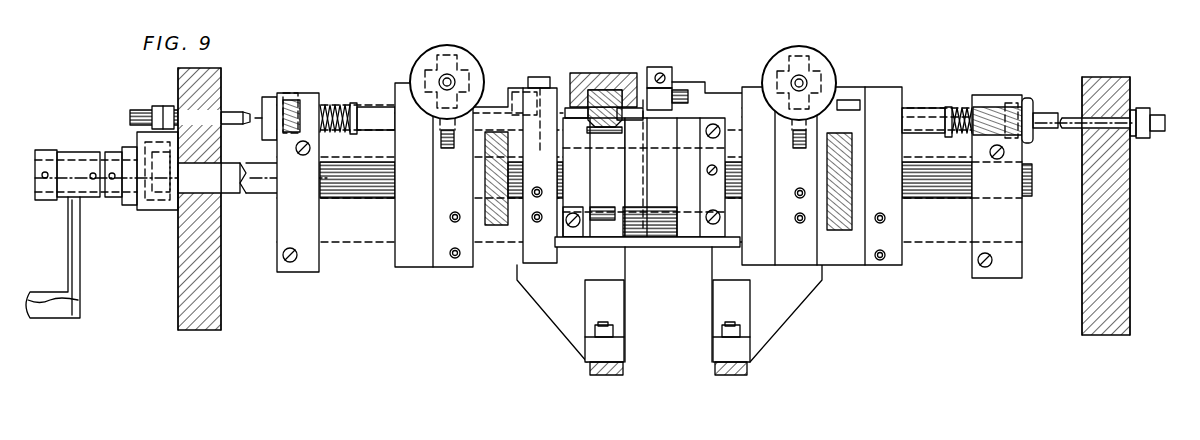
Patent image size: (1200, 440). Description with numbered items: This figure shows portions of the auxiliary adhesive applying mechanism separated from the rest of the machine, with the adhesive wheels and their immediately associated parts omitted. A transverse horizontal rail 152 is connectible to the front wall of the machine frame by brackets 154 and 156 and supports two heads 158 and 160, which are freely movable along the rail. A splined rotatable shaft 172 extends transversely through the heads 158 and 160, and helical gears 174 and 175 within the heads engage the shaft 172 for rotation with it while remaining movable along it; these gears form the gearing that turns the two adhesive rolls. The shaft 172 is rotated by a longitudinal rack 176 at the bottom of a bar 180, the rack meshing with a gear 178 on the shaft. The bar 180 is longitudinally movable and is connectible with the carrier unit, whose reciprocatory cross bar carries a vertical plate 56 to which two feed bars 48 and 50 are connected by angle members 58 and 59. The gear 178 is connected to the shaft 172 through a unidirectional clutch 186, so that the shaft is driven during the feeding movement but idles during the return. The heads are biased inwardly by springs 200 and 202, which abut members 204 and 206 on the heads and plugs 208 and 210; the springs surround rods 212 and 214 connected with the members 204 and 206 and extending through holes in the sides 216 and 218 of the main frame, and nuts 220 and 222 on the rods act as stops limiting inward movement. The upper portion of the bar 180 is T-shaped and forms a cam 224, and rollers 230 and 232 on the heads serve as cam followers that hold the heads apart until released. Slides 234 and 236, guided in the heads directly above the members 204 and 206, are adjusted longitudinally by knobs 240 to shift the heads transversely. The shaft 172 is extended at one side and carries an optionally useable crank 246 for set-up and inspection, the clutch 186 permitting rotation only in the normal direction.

The feed bar 48 is at (618, 377).
The feed bar 50 is at (725, 377).
The vertical plate 56 is at (538, 313).
The angle member 58 is at (591, 305).
The angle member 59 is at (751, 292).
The transverse horizontal rail 152 is at (357, 237).
The bracket 154 is at (278, 230).
The bracket 156 is at (1020, 218).
The head 158 is at (446, 268).
The head 160 is at (900, 268).
The rotatable shaft 172 is at (332, 162).
The helical gear 174 is at (494, 228).
The helical gear 175 is at (836, 231).
The longitudinal rack 176 is at (598, 130).
The gear 178 is at (605, 220).
The bar 180 is at (610, 90).
The unidirectional clutch 186 is at (648, 242).
The spring 200 is at (326, 104).
The spring 202 is at (970, 108).
The member 204 is at (360, 110).
The member 206 is at (912, 110).
The plug 208 is at (286, 100).
The plug 210 is at (1012, 103).
The rod 212 is at (233, 112).
The rod 214 is at (1045, 118).
The side of the main frame 216 is at (180, 292).
The side of the main frame 218 is at (1132, 265).
The nut 220 is at (165, 108).
The nut 222 is at (1145, 110).
The cam 224 is at (586, 74).
The roller 230 is at (562, 88).
The roller 232 is at (683, 90).
The slide 234 is at (490, 100).
The slide 236 is at (843, 100).
The knob 240 is at (466, 51).
The crank 246 is at (78, 262).